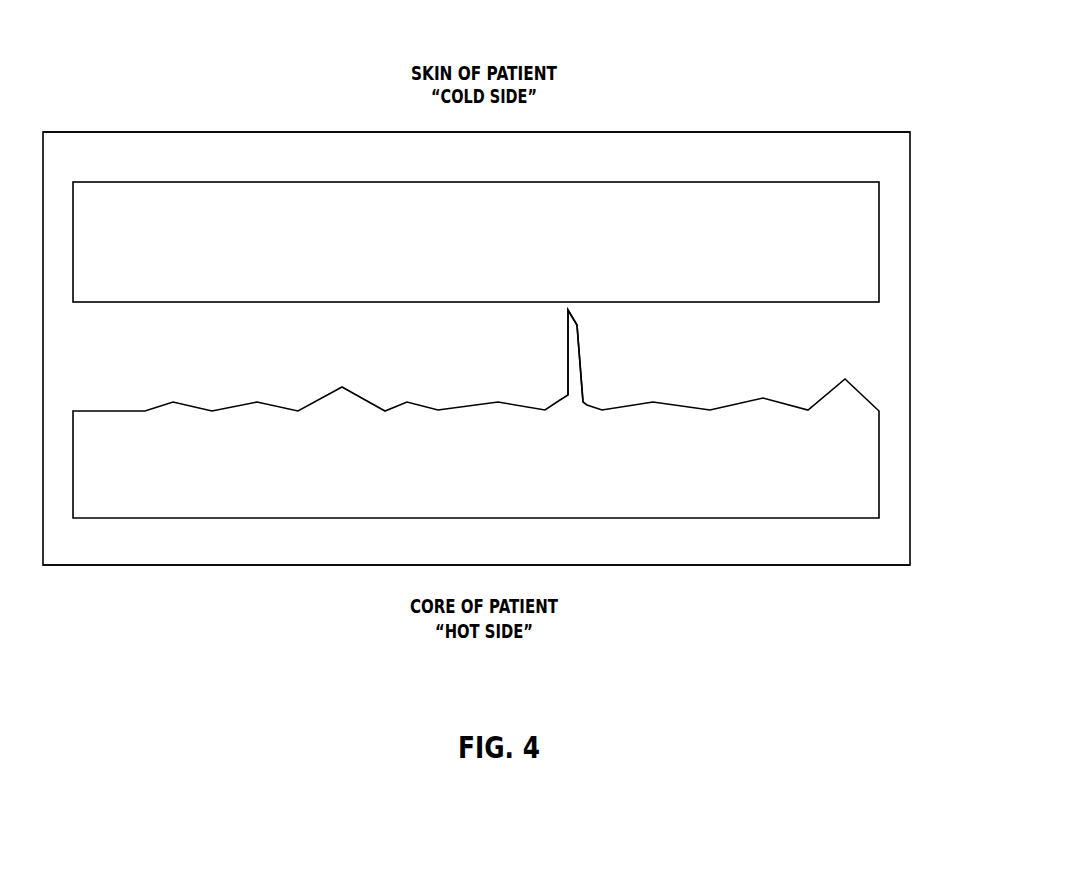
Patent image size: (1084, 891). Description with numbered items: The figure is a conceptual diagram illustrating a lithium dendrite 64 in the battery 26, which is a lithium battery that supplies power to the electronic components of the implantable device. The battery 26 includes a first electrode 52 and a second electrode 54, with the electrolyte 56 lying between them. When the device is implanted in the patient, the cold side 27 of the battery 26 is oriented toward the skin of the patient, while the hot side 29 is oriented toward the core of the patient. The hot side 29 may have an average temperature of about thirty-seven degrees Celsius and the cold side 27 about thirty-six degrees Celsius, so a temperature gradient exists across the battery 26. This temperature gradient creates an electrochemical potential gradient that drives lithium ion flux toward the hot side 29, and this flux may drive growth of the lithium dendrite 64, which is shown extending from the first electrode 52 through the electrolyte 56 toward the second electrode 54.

The battery 26 is at (895, 65).
The cold side 27 is at (747, 136).
The hot side 29 is at (738, 565).
The first electrode 52 is at (476, 414).
The second electrode 54 is at (476, 242).
The electrolyte 56 is at (476, 356).
The lithium dendrite 64 is at (575, 352).